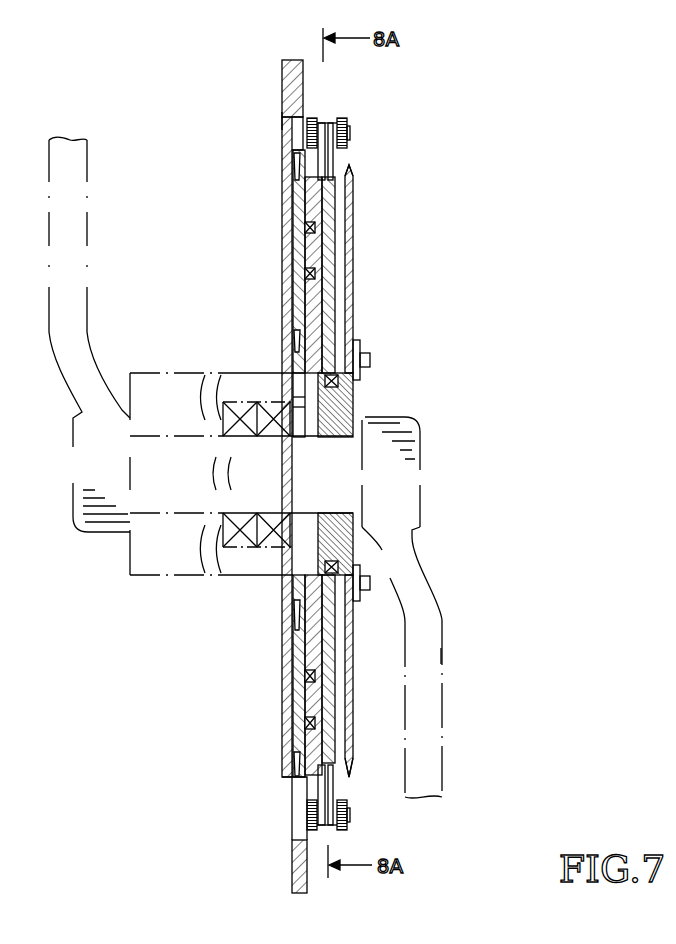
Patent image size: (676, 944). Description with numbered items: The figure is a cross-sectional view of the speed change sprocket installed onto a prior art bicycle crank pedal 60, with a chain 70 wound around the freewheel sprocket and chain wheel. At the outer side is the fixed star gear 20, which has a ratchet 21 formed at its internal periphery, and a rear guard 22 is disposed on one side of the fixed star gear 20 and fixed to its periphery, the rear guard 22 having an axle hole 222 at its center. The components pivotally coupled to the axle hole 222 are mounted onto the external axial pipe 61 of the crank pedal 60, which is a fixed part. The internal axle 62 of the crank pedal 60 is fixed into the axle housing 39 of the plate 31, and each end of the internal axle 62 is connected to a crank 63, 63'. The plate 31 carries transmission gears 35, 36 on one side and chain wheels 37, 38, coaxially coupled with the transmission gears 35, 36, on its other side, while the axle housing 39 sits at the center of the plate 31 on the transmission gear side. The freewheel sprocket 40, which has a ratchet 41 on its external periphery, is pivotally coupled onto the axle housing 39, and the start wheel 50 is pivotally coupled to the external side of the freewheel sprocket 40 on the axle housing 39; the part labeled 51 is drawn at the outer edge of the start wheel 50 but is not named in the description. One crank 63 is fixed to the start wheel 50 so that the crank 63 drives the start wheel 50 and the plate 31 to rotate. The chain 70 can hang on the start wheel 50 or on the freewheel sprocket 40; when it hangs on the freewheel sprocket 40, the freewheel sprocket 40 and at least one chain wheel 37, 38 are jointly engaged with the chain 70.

The fixed star gear 20 is at (302, 78).
The ratchet 21 is at (298, 117).
The rear guard 22 is at (282, 120).
The bicycle chain 70 is at (345, 128).
The ratchet 41 is at (335, 153).
The rim edge 51 is at (350, 178).
The chain wheel 37 is at (322, 212).
The freewheel sprocket 40 is at (333, 256).
The start wheel 50 is at (353, 297).
The plate 31 is at (294, 186).
The transmission gear 36 is at (298, 218).
The axle housing 39 is at (353, 410).
The external axial pipe 61 is at (243, 382).
The axle hole 222 is at (282, 372).
The internal axle 62 is at (249, 497).
The transmission gear 35 is at (296, 752).
The chain wheel 38 is at (330, 765).
The crank 63 is at (472, 661).
The crank 63' is at (100, 334).
The bicycle crank pedal 60 is at (460, 716).